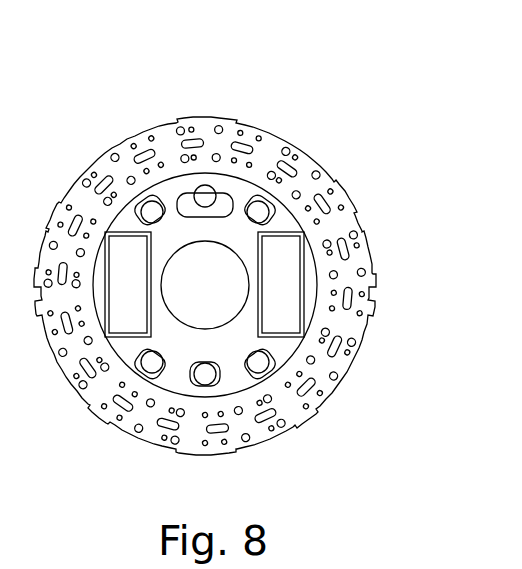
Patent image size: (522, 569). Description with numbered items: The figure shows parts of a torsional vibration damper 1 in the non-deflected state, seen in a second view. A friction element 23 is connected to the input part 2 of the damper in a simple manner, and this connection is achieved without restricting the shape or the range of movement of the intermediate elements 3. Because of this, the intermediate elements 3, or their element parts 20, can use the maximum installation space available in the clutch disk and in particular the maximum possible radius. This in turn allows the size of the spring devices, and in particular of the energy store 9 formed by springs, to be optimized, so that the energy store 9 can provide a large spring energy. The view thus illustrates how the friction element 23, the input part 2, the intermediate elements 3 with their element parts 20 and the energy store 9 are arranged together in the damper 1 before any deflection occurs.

The torsional vibration damper 1 is at (220, 253).
The input part 2 is at (248, 192).
The friction element 23 is at (312, 163).
The energy store 9 is at (294, 284).
The intermediate element 3 is at (236, 380).
The element part 20 is at (235, 344).